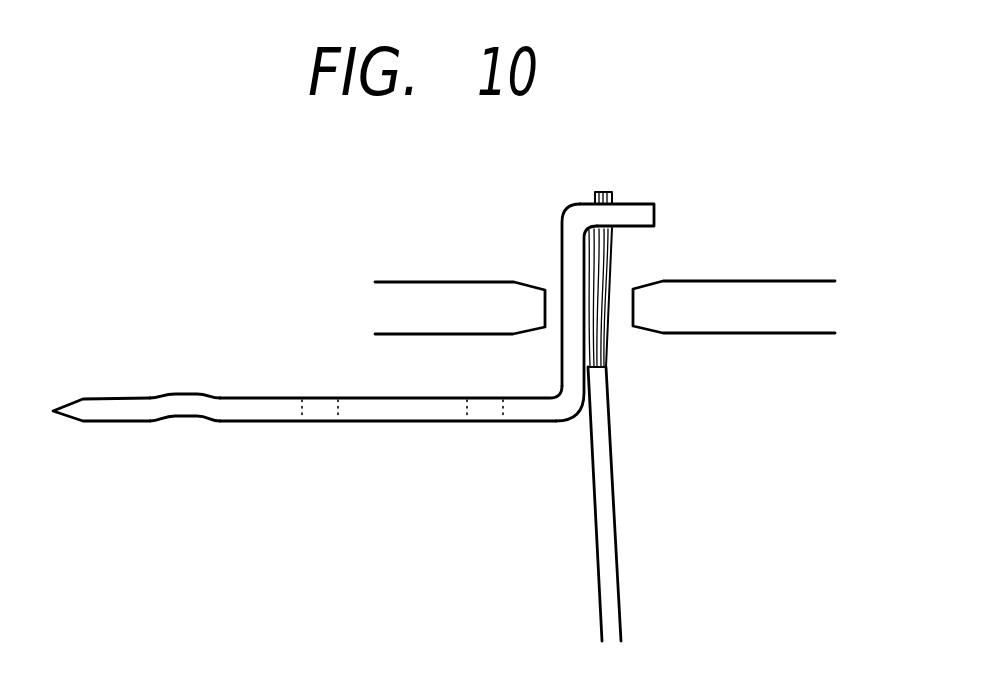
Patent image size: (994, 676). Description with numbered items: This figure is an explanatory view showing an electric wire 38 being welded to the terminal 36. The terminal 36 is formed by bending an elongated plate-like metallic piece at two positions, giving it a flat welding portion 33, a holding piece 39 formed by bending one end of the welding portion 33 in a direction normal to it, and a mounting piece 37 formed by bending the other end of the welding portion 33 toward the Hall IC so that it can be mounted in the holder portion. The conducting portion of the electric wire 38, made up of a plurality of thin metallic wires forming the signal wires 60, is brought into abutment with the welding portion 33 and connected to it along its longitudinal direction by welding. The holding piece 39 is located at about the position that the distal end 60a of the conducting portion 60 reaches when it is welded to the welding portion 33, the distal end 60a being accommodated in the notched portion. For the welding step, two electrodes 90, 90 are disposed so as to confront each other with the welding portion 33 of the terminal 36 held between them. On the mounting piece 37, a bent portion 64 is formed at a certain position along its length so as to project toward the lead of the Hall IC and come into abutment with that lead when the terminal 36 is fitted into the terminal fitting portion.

The terminal 36 is at (293, 286).
The mounting piece 37 is at (373, 412).
The bent portion 64 is at (182, 402).
The welding portion 33 is at (572, 255).
The holding piece 39 is at (642, 213).
The signal wires (conducting portion) 60 is at (605, 340).
The distal end of the conducting portion 60a is at (610, 192).
The electric wire 38 is at (603, 490).
The electrodes 90 is at (400, 297).